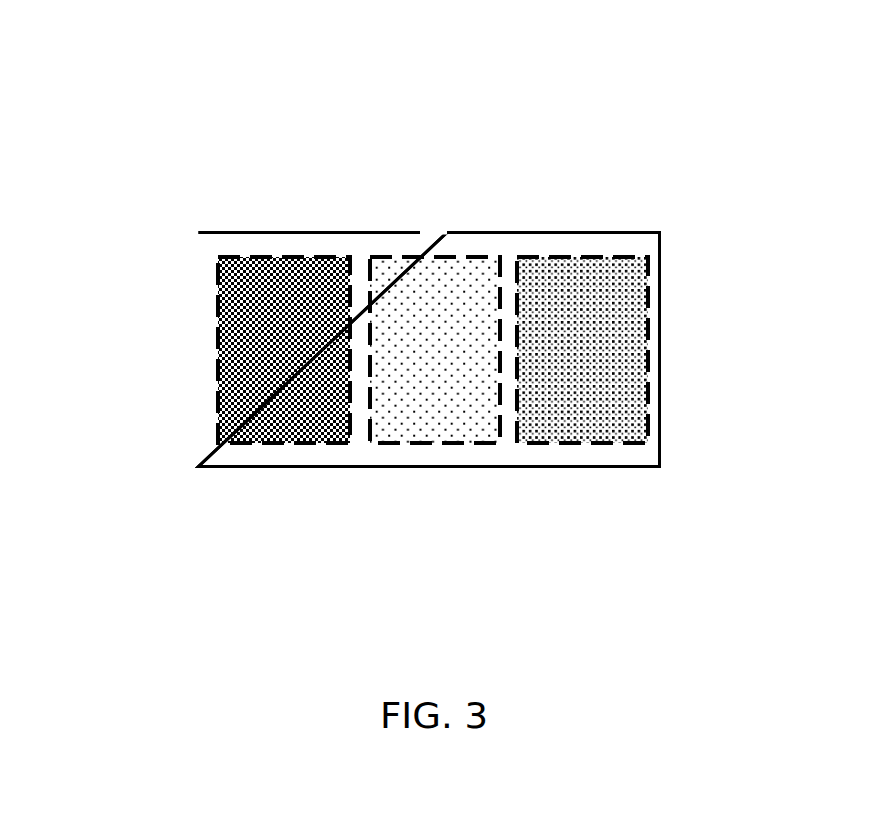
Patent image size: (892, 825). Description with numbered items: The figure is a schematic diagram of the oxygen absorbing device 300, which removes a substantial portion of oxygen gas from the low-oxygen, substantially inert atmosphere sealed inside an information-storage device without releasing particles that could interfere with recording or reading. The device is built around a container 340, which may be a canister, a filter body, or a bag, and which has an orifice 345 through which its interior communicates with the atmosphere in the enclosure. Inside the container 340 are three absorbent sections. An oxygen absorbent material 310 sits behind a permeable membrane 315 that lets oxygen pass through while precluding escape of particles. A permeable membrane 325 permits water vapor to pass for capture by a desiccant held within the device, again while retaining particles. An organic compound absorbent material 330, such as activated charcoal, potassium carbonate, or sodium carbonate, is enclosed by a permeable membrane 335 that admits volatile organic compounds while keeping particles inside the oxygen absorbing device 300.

The oxygen absorbing device 300 is at (694, 171).
The container 340 is at (197, 238).
The orifice 345 is at (430, 216).
The permeable membrane 335 is at (216, 333).
The organic compound absorbent material 330 is at (248, 377).
The permeable membrane 325 is at (492, 444).
The permeable membrane 315 is at (650, 284).
The oxygen absorbent material 310 is at (612, 321).